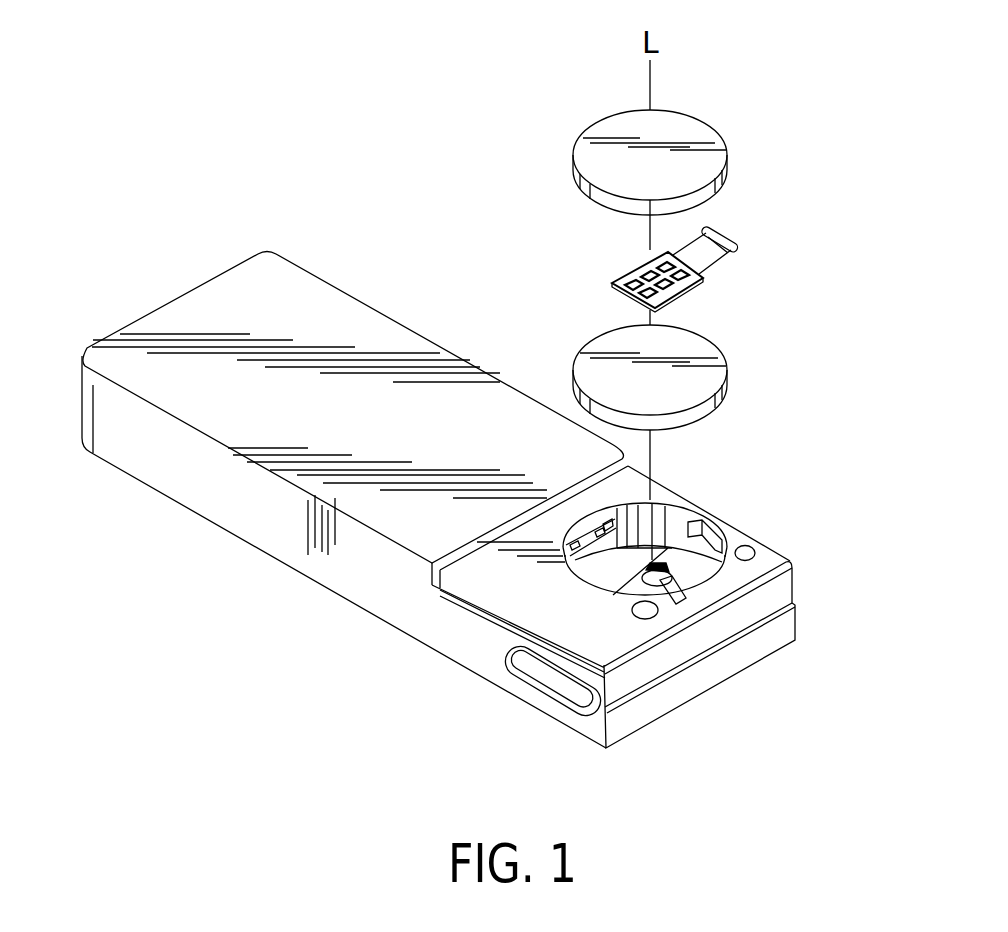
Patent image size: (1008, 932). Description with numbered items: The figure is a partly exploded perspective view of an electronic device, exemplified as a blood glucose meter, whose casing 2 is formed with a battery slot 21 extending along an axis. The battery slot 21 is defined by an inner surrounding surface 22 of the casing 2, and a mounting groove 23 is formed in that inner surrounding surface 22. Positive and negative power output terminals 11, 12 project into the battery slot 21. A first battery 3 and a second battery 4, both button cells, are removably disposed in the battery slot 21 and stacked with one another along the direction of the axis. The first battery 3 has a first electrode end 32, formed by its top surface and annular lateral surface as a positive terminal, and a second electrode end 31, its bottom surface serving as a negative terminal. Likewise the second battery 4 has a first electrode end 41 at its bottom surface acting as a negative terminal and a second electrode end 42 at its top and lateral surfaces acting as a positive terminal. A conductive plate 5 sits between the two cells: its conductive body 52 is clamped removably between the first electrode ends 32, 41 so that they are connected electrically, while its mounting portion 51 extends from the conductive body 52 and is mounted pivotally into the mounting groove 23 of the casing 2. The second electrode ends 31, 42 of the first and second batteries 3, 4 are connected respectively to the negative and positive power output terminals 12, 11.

The casing 2 is at (379, 292).
The battery slot 21 is at (662, 500).
The inner surrounding surface 22 is at (660, 514).
The mounting groove 23 is at (710, 527).
The positive power output terminal 11 is at (567, 543).
The negative power output terminal 12 is at (677, 577).
The first battery 3 is at (735, 353).
The second electrode end of the first battery 31 is at (712, 420).
The first electrode end of the first battery 32 is at (690, 352).
The second battery 4 is at (721, 125).
The first electrode end of the second battery 41 is at (606, 202).
The second electrode end of the second battery 42 is at (640, 125).
The conductive plate 5 is at (737, 231).
The mounting portion 51 is at (740, 246).
The conductive body 52 is at (613, 280).